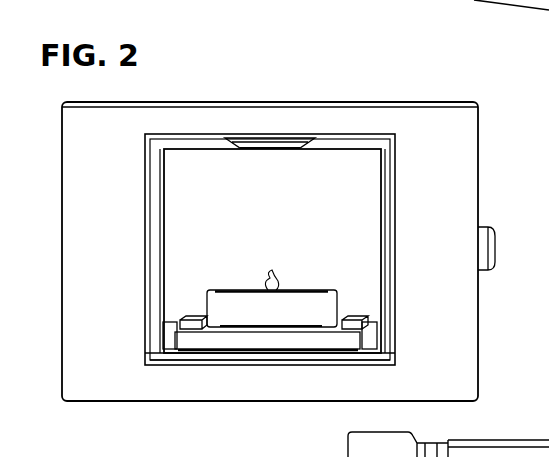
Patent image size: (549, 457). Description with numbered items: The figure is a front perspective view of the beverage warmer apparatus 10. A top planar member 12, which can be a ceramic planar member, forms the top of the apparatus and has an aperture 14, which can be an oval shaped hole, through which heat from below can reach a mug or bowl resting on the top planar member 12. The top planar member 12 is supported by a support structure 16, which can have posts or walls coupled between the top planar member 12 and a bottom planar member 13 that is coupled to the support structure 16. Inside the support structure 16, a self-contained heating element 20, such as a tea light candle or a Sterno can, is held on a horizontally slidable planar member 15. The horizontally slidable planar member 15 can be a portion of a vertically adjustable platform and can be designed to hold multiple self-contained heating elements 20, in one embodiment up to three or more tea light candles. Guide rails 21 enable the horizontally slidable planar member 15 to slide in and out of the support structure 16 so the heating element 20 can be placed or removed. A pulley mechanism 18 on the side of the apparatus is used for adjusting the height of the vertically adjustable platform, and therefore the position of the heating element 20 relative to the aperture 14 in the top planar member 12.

The beverage warmer apparatus 10 is at (200, 80).
The top planar member 12 is at (208, 106).
The bottom planar member 13 is at (288, 395).
The aperture 14 is at (278, 143).
The horizontally slidable planar member 15 is at (225, 340).
The support structure 16 is at (123, 265).
The pulley mechanism 18 is at (487, 228).
The self-contained heating element 20 is at (317, 292).
The guide rails 21 is at (194, 316).